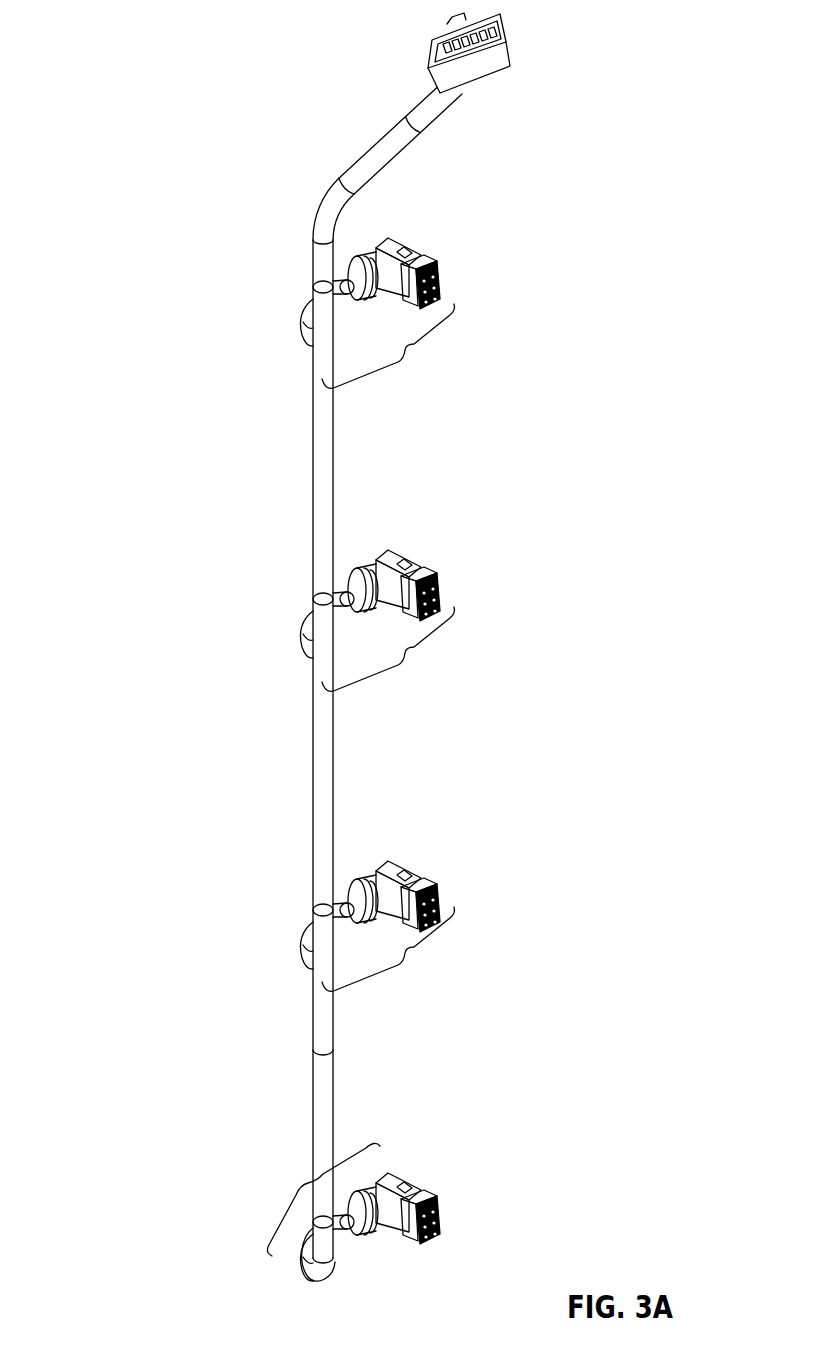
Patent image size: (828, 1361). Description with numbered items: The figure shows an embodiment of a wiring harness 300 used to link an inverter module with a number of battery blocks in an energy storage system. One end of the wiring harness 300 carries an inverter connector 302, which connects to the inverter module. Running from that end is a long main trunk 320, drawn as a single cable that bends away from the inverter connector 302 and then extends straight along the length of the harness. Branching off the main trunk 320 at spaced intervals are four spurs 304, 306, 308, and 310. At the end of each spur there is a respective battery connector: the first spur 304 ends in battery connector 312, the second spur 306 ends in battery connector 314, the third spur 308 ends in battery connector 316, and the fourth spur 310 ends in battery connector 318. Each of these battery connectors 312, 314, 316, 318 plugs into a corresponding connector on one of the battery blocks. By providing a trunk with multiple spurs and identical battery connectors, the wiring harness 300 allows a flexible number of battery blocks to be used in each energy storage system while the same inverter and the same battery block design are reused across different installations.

The wiring harness 300 is at (160, 36).
The inverter connector 302 is at (507, 30).
The spur 304 is at (388, 354).
The spur 306 is at (388, 657).
The spur 308 is at (388, 957).
The spur 310 is at (318, 1199).
The battery connector 312 is at (433, 255).
The battery connector 314 is at (433, 567).
The battery connector 316 is at (433, 878).
The battery connector 318 is at (433, 1190).
The main trunk 320 is at (243, 88).